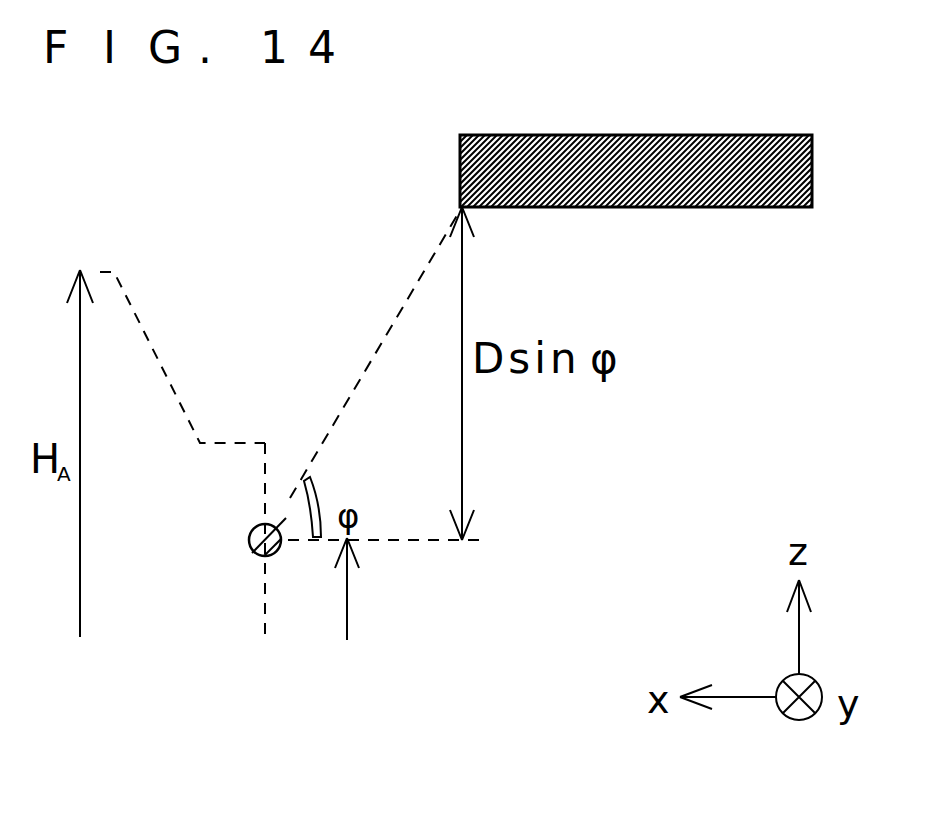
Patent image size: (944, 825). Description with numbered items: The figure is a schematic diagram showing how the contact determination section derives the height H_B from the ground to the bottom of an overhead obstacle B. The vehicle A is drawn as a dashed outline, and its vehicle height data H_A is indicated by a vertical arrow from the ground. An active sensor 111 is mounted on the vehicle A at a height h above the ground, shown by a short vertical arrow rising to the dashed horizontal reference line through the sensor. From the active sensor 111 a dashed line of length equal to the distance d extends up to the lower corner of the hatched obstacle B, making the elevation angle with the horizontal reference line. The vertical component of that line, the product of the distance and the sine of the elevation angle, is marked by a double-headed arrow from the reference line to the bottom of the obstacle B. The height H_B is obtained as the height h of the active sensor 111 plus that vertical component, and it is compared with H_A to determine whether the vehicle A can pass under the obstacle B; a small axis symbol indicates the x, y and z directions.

The active sensor 111 is at (252, 552).
The vehicle A is at (223, 443).
The obstacle B is at (636, 170).
The distance d is at (376, 352).
The height of active sensor h is at (359, 589).